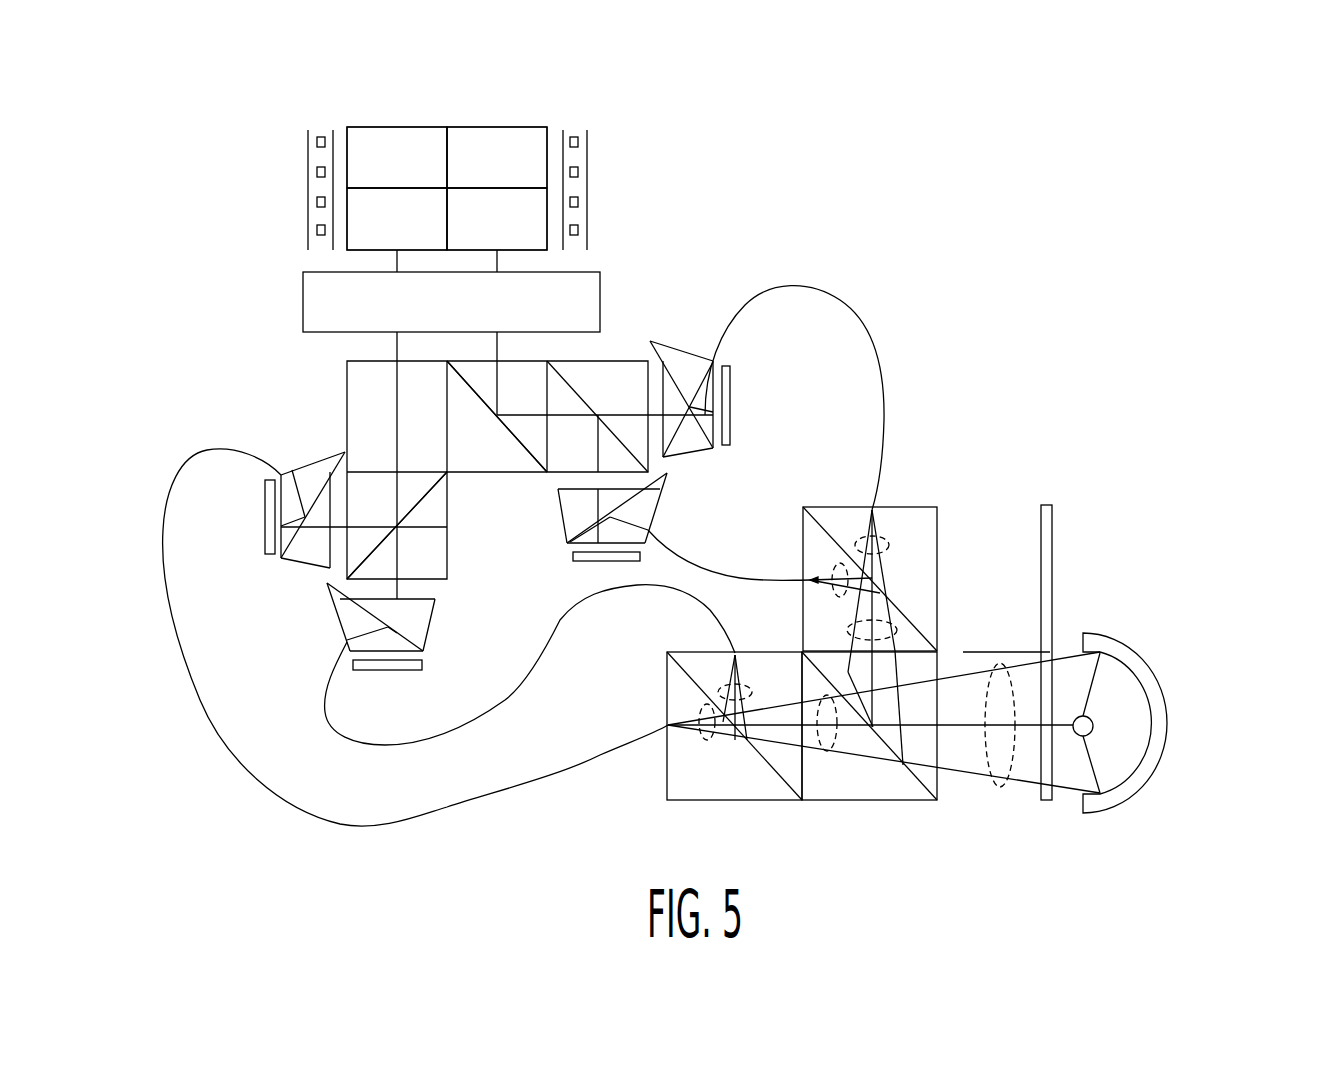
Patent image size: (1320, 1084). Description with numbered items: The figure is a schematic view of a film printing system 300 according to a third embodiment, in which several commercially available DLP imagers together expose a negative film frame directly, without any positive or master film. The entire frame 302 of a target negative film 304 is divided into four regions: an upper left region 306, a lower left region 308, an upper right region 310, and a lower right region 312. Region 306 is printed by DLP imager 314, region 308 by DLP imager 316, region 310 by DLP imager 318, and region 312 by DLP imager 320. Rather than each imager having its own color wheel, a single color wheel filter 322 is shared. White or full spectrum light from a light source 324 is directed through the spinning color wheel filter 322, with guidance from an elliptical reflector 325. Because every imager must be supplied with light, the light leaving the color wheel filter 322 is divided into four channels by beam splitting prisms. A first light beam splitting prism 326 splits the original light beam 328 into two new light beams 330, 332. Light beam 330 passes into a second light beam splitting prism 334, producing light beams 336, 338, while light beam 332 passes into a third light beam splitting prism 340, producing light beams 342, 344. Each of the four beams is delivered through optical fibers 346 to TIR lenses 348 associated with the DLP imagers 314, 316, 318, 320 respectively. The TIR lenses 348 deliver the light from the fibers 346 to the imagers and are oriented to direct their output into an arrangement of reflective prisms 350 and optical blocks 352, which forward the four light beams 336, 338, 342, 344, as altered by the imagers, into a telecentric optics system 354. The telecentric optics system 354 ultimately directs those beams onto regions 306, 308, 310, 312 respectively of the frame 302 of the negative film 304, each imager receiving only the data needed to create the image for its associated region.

The film printing system 300 is at (1077, 245).
The frame 302 is at (510, 127).
The target negative film 304 is at (590, 182).
The upper left region 306 is at (381, 173).
The lower left region 308 is at (381, 233).
The upper right region 310 is at (481, 173).
The lower right region 312 is at (481, 233).
The DLP imager 314 is at (265, 527).
The DLP imager 316 is at (396, 671).
The DLP imager 318 is at (583, 563).
The DLP imager 320 is at (733, 393).
The color wheel filter 322 is at (1052, 518).
The light source 324 is at (1093, 727).
The elliptical reflector 325 is at (1160, 687).
The first light beam splitting prism 326 is at (887, 805).
The original light beam 328 is at (1010, 763).
The light beam 330 is at (825, 757).
The light beam 332 is at (910, 627).
The second light beam splitting prism 334 is at (734, 802).
The light beam 336 is at (700, 712).
The light beam 338 is at (743, 680).
The third light beam splitting prism 340 is at (940, 558).
The light beam 342 is at (838, 562).
The light beam 344 is at (887, 540).
The optical fibers 346 is at (875, 340).
The TIR lenses 348 is at (307, 458).
The reflective prisms 350 is at (557, 474).
The optical blocks 352 is at (382, 408).
The telecentric optics system 354 is at (435, 318).